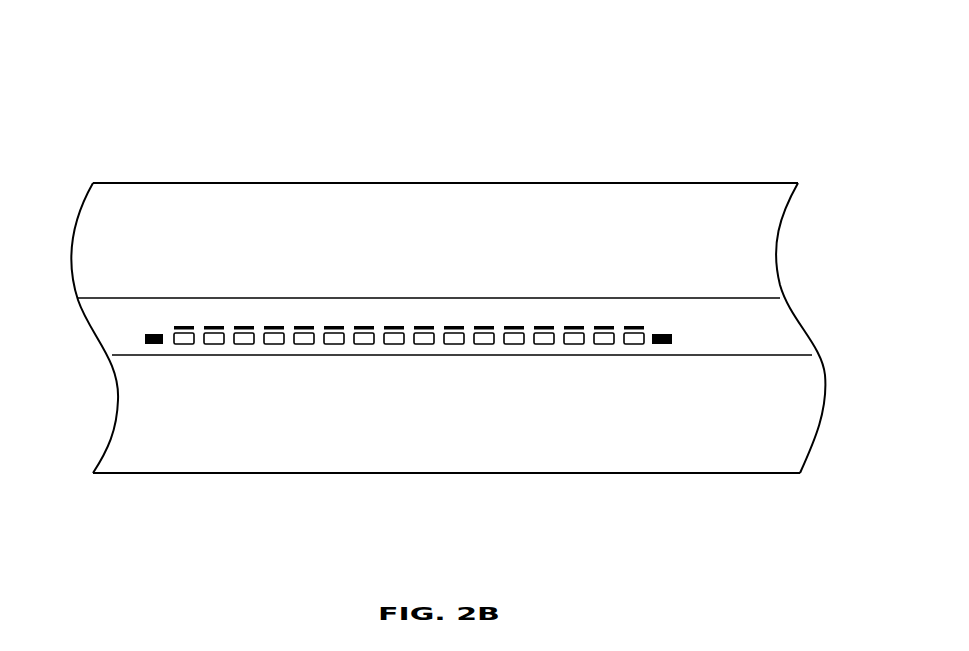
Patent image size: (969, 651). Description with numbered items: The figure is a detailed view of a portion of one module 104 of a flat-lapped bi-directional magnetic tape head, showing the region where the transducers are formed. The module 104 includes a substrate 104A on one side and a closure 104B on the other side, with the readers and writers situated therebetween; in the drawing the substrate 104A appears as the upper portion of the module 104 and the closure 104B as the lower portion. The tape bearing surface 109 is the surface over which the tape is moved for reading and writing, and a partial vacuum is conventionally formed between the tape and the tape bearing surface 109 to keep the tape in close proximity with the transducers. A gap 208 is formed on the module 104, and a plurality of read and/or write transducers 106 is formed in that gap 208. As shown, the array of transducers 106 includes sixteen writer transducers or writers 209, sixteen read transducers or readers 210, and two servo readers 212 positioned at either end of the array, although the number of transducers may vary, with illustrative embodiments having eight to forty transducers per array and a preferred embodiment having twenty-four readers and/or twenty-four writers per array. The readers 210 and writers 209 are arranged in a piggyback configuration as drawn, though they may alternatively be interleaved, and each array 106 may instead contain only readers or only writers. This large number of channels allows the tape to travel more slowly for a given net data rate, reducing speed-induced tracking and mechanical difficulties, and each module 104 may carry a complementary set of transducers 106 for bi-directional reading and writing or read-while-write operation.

The module 104 is at (105, 132).
The substrate 104A is at (212, 183).
The closure 104B is at (272, 477).
The tape bearing surface 109 is at (362, 262).
The read and/or write transducers 106 is at (698, 325).
The gap 208 is at (800, 322).
The writer transducers 209 is at (573, 325).
The read transducers 210 is at (543, 345).
The servo readers 212 is at (143, 338).